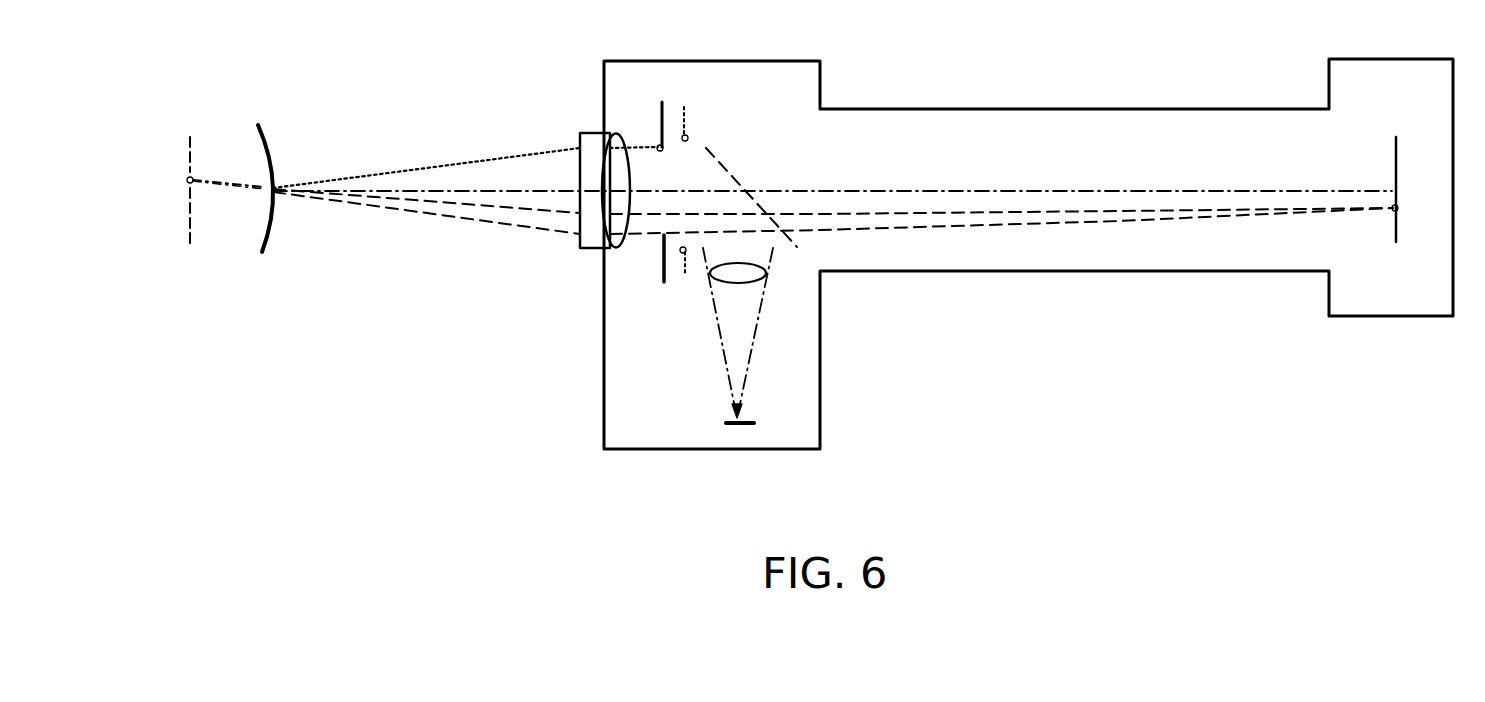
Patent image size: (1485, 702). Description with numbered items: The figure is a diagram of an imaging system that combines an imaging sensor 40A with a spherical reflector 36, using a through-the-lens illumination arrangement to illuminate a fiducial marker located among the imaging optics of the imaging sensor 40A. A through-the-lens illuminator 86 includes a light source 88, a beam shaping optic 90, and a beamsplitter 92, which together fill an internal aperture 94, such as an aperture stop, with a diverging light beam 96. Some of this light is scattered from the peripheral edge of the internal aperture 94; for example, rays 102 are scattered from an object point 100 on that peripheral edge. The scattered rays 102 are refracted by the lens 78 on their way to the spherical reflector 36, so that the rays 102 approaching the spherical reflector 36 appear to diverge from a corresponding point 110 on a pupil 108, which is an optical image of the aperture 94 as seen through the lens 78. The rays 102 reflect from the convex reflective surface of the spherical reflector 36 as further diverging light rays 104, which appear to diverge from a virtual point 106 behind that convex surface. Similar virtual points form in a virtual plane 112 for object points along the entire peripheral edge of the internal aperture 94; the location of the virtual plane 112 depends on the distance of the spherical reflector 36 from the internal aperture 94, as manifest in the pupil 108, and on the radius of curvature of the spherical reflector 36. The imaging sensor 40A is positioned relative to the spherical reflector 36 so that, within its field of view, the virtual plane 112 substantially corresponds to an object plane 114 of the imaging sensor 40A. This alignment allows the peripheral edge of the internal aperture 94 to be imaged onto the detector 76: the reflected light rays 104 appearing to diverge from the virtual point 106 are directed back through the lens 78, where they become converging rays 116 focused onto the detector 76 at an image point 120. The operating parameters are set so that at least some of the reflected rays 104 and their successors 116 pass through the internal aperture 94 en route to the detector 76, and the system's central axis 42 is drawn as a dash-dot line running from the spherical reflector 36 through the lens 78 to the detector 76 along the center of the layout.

The imaging sensor 40A is at (1092, 108).
The through-the-lens illuminator 86 is at (800, 360).
The lens 78 is at (593, 133).
The spherical reflector 36 is at (275, 225).
The virtual point 106 is at (188, 178).
The virtual plane 112 is at (190, 218).
The object plane 114 is at (228, 185).
The optical axis 42 is at (922, 191).
The rays 102 is at (462, 166).
The further diverging light rays 104 is at (517, 235).
The converging rays 116 is at (1070, 222).
The object point 100 is at (664, 153).
The corresponding point 110 is at (690, 137).
The beamsplitter 92 is at (727, 173).
The internal aperture 94 is at (652, 233).
The pupil 108 is at (685, 284).
The beam shaping optic 90 is at (766, 285).
The diverging light beam 96 is at (713, 327).
The light source 88 is at (753, 425).
The detector 76 is at (1392, 155).
The image point 120 is at (1390, 210).